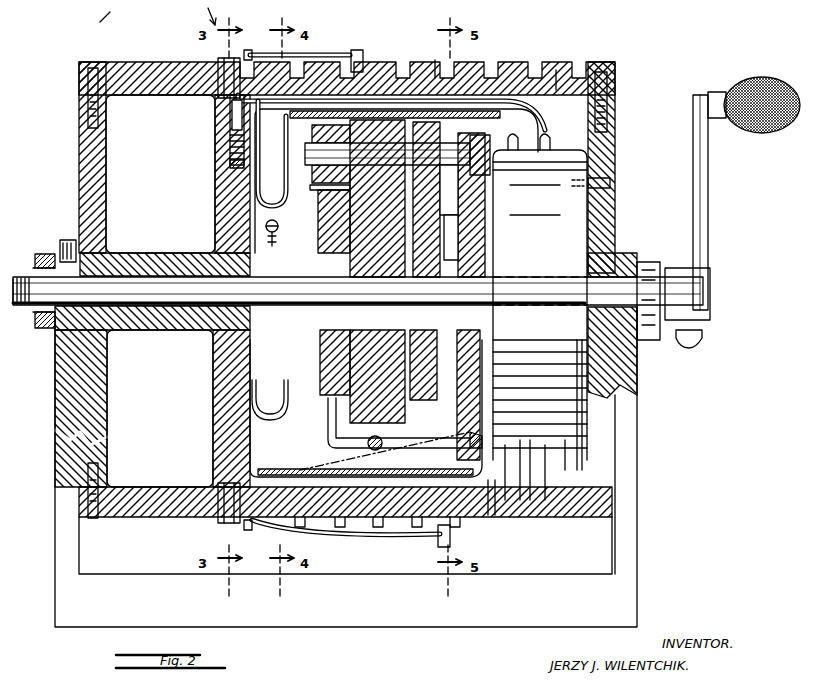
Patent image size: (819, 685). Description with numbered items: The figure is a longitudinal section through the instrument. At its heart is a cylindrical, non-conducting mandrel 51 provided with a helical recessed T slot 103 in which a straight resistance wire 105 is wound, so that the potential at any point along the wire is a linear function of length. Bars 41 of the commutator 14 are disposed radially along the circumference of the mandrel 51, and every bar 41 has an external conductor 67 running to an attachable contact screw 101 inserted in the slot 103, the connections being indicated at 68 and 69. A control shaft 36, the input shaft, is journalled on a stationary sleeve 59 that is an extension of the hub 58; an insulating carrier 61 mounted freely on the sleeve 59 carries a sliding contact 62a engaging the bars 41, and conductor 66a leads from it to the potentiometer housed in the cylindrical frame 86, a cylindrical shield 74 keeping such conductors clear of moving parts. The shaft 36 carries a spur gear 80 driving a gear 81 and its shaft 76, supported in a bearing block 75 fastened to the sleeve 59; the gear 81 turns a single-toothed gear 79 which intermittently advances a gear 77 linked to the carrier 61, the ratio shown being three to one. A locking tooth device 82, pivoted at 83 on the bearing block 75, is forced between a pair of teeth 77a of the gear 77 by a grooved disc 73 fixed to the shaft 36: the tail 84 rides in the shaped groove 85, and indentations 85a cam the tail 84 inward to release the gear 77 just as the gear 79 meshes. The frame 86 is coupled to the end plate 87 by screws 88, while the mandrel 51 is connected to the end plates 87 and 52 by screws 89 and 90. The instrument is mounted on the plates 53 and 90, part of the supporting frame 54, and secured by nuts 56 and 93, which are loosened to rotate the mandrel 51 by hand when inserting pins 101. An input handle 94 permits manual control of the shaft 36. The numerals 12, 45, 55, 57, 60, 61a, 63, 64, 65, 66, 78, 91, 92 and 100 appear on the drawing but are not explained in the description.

The housing 12 is at (535, 55).
The commutator 14 is at (213, 12).
The control shaft 36 is at (140, 310).
The bars 41 is at (218, 62).
The cable 45 is at (97, 19).
The mandrel 51 is at (147, 68).
The end plate 52 is at (79, 168).
The plate 53 is at (58, 386).
The supporting frame 54 is at (100, 580).
The nut 55 is at (28, 276).
The nut 56 is at (44, 262).
The screw 57 is at (68, 240).
The hub 58 is at (150, 253).
The stationary sleeve 59 is at (203, 253).
The screw 60 is at (88, 80).
The insulating carrier 61 is at (215, 184).
The lower partition wall 61a is at (196, 330).
The sliding contact 62a is at (228, 118).
The spring 63 is at (230, 138).
The valve seat 64 is at (230, 163).
The valve 65 is at (228, 106).
The tube 66 is at (375, 100).
The conductor 66a is at (270, 173).
The external conductor 67 is at (325, 48).
The connection 68 is at (252, 50).
The connection 69 is at (370, 48).
The grooved disc 73 is at (468, 248).
The cylindrical shield 74 is at (290, 466).
The bearing block 75 is at (300, 420).
The shaft 76 is at (345, 201).
The gear 77 is at (320, 223).
The teeth 77a is at (325, 398).
The upper spool flange 78 is at (318, 126).
The single-toothed gear 79 is at (320, 179).
The spur gear 80 is at (449, 199).
The gear 81 is at (449, 190).
The locking tooth device 82 is at (330, 448).
The pivot mounting 83 is at (385, 448).
The tail 84 is at (468, 436).
The shaped groove 85 is at (480, 140).
The indentations 85a is at (518, 134).
The cylindrical frame 86 is at (540, 310).
The end plate 87 is at (606, 158).
The screws 88 is at (612, 186).
The screw 89 is at (608, 70).
The screw 90 is at (628, 440).
The bearing 91 is at (625, 256).
The nut 92 is at (636, 335).
The nut 93 is at (672, 345).
The input handle 94 is at (708, 250).
The fin stack 100 is at (526, 496).
The contact screw 101 is at (490, 518).
The helical T slot 103 is at (556, 70).
The resistance wire 105 is at (570, 540).